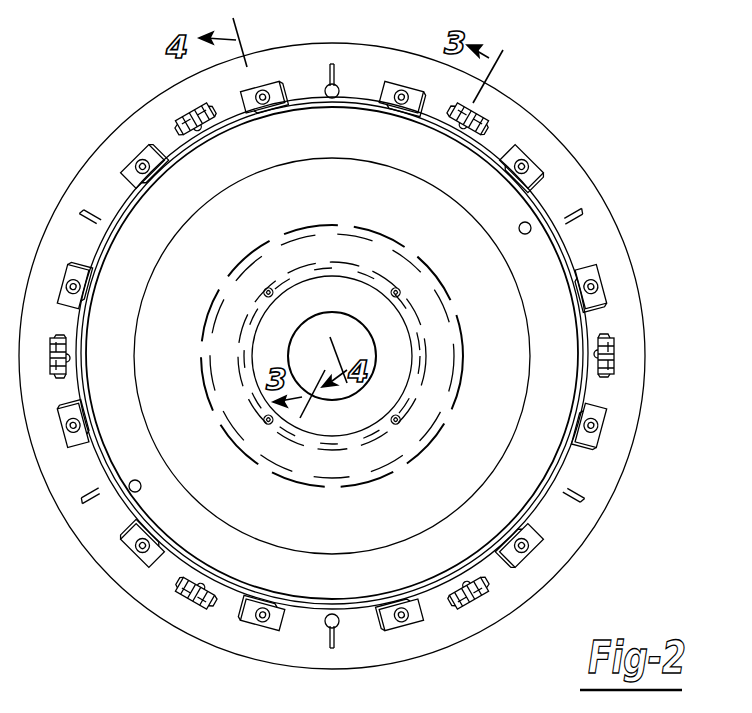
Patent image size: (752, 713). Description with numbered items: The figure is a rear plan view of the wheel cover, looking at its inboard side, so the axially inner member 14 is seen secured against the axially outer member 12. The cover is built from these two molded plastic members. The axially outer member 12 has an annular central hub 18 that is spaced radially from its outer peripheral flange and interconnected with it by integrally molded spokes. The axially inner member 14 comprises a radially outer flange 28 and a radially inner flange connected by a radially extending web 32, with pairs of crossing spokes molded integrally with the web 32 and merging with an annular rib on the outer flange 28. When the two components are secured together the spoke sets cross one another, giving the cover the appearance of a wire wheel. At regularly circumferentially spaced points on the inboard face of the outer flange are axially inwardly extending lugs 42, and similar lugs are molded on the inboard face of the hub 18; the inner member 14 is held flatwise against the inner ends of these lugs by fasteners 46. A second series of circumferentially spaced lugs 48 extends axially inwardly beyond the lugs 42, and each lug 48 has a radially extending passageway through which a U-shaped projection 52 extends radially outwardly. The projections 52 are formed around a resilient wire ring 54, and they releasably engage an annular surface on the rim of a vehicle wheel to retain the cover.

The axially outer member 12 is at (651, 215).
The axially inner member 14 is at (548, 210).
The annular central hub 18 is at (326, 292).
The radially outer flange 28 is at (508, 157).
The radially extending web 32 is at (509, 329).
The lugs 42 is at (396, 84).
The fasteners 46 is at (395, 291).
The lugs 48 is at (222, 108).
The U-shaped projection 52 is at (473, 110).
The resilient wire ring 54 is at (566, 252).